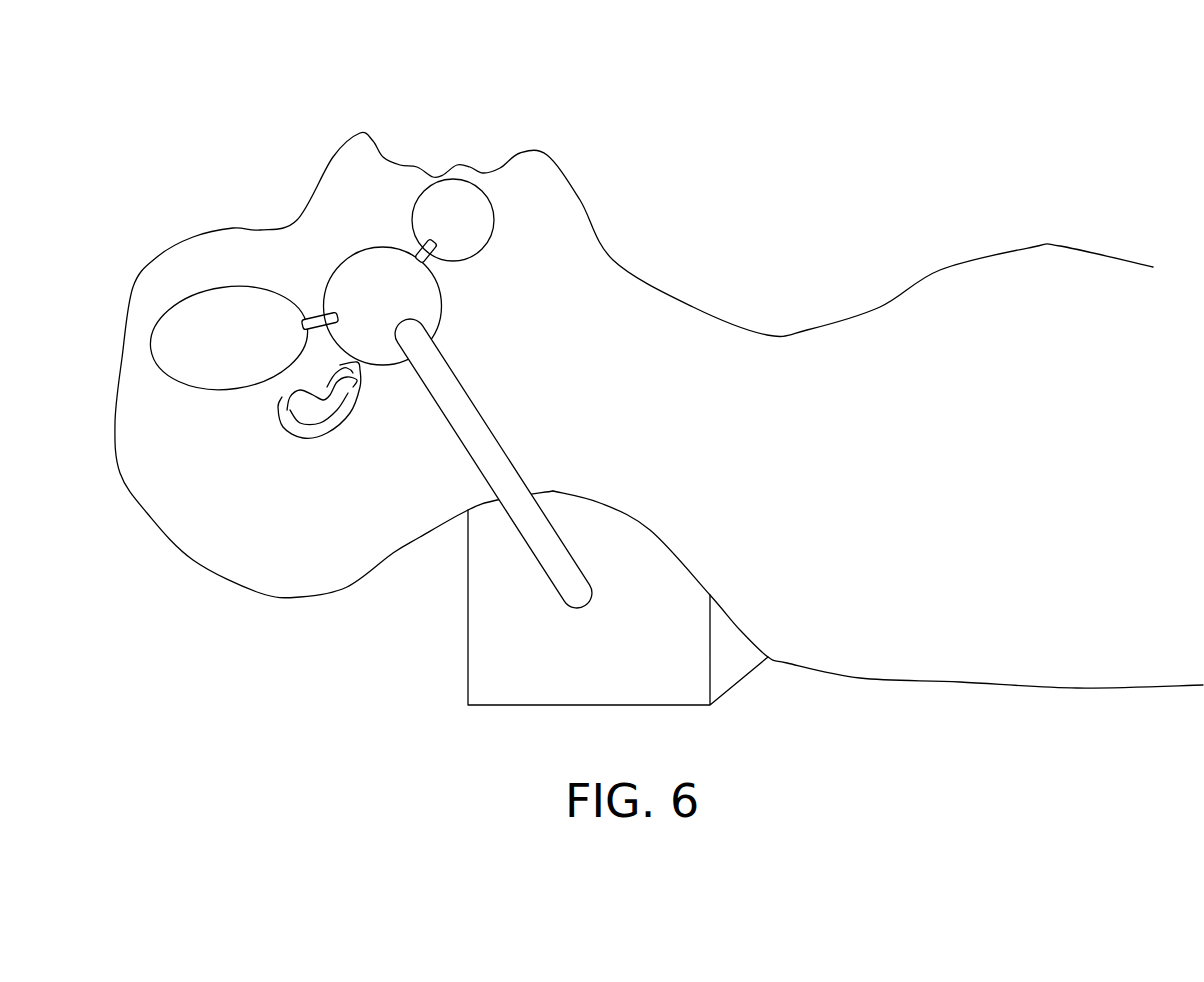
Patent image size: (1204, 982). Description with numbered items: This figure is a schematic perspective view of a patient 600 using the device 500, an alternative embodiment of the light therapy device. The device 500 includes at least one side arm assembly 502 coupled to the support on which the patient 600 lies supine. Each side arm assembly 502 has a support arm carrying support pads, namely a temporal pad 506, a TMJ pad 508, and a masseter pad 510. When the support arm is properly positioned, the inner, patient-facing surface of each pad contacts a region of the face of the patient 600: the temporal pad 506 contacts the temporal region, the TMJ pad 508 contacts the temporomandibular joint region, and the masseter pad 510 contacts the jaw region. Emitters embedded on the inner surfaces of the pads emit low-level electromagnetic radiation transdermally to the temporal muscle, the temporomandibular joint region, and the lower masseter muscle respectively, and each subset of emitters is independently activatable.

The device 500 is at (413, 613).
The side arm assembly 502 is at (393, 437).
The temporal pad 506 is at (228, 320).
The TMJ pad 508 is at (368, 283).
The masseter pad 510 is at (453, 208).
The patient 600 is at (697, 122).